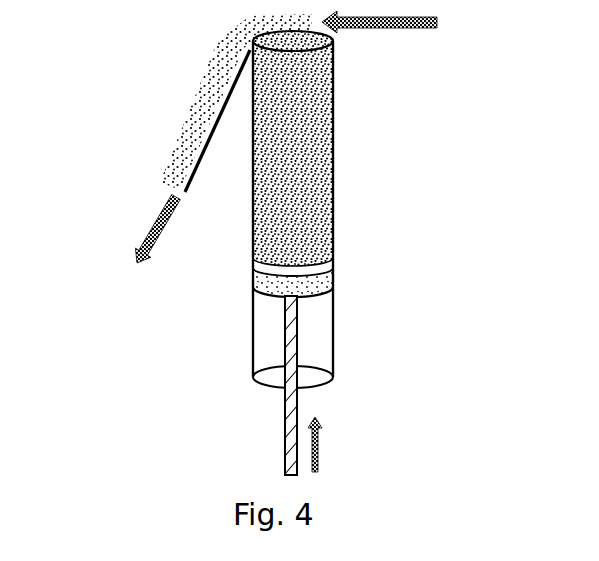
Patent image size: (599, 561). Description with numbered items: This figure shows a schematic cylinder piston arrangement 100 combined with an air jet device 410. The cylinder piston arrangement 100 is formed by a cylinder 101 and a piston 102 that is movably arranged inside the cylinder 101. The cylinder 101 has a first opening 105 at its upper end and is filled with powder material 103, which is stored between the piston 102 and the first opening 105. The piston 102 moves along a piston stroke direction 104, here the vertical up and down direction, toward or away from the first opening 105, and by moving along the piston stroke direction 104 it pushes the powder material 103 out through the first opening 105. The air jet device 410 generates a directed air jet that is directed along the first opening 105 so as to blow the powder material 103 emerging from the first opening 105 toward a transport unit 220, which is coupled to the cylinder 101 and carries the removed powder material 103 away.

The cylinder piston arrangement 100 is at (366, 205).
The cylinder 101 is at (333, 240).
The piston 102 is at (333, 285).
The powder material 103 is at (317, 118).
The piston stroke direction 104 is at (319, 419).
The first opening 105 is at (332, 45).
The air jet device 410 is at (421, 28).
The transport unit 220 is at (185, 190).